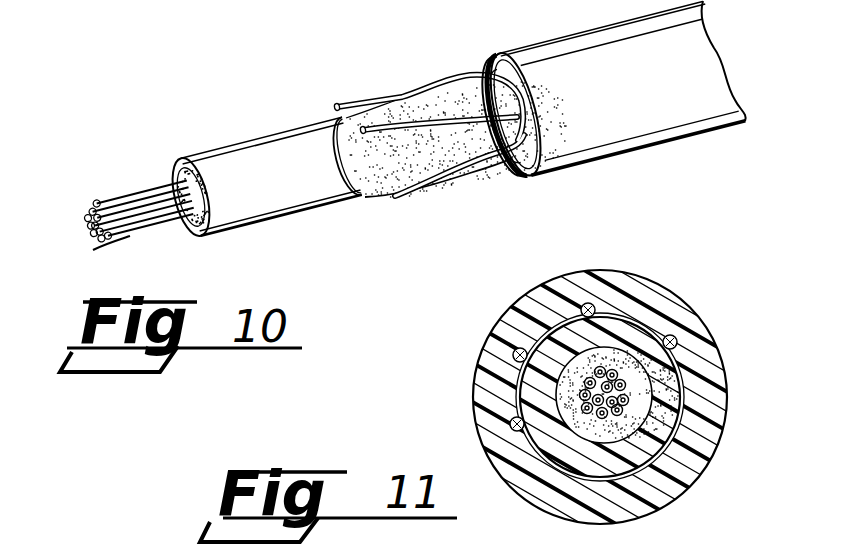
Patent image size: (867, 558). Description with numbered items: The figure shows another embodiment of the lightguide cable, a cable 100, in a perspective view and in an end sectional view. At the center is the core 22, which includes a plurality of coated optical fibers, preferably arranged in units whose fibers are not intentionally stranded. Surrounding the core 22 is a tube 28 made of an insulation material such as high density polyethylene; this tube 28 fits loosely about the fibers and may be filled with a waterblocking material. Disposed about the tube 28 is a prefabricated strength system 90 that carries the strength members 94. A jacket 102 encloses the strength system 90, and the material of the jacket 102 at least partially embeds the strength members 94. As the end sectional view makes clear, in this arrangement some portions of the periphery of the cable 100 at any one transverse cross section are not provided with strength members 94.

In FIG. 10, the core 22 is at (141, 188).
In FIG. 10, the tube 28 is at (220, 162).
In FIG. 10, the prefabricated strength system 90 is at (386, 199).
In FIG. 10, the strength members 94 is at (427, 188).
In FIG. 11, the strength members 94 is at (592, 305).
In FIG. 10, the cable 100 is at (320, 70).
In FIG. 11, the cable 100 is at (705, 282).
In FIG. 10, the jacket 102 is at (500, 62).